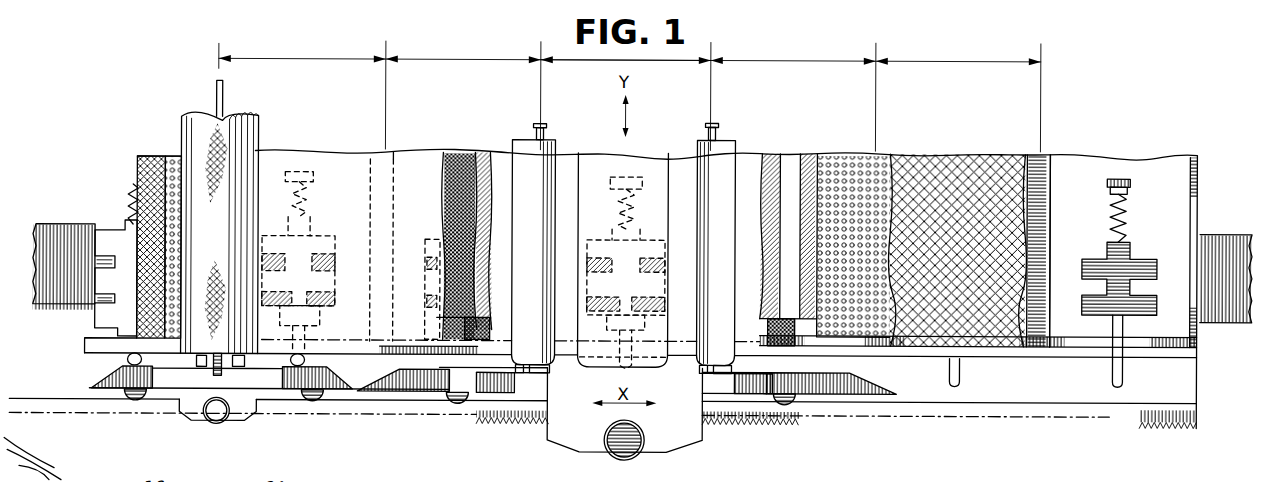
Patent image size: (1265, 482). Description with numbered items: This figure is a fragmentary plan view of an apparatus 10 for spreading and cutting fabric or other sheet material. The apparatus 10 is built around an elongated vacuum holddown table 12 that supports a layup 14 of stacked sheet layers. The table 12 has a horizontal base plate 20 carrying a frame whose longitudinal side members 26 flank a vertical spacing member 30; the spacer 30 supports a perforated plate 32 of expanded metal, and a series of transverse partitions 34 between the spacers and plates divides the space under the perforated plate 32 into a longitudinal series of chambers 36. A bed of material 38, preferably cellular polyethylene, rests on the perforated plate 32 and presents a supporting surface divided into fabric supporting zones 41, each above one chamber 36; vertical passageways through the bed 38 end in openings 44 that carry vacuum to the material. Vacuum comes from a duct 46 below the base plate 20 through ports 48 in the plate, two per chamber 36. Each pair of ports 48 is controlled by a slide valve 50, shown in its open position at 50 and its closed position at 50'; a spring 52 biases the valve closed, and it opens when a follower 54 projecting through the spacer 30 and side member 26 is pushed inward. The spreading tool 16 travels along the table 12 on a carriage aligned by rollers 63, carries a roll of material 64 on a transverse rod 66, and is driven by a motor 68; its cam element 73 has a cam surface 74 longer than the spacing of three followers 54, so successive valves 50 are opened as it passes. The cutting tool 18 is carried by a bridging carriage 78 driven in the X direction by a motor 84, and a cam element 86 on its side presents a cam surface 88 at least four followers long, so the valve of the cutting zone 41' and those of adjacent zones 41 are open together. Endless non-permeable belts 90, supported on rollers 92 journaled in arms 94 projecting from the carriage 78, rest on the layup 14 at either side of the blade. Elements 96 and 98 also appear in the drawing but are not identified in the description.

The apparatus 10 is at (987, 137).
The vacuum holddown table 12 is at (1212, 395).
The layup 14 is at (455, 160).
The spreading tool 16 is at (183, 104).
The cutting tool 18 is at (706, 449).
The base plate 20 is at (1175, 281).
The side member 26 is at (1053, 352).
The vertical spacing member 30 is at (1197, 356).
The perforated plate 32 is at (923, 170).
The partition 34 is at (1038, 163).
The chamber 36 is at (1174, 212).
The bed of material 38 is at (168, 157).
The fabric supporting zone 41 is at (629, 96).
The cutting zone 41' is at (626, 77).
The opening 44 is at (845, 163).
The vacuum duct 46 is at (47, 232).
The port 48 is at (110, 300).
The slide valve 50 is at (1134, 300).
The slide valve closed position 50' is at (364, 270).
The spring 52 is at (132, 197).
The follower 54 is at (127, 361).
The roller 63 is at (130, 402).
The roll of material 64 is at (252, 133).
The rod 66 is at (222, 97).
The drive motor 68 is at (223, 423).
The cam element 73 is at (270, 385).
The cam surface 74 is at (95, 380).
The supporting carriage 78 is at (634, 162).
The drive motor 84 is at (613, 438).
The cam element 86 is at (850, 392).
The cam surface 88 is at (883, 383).
The endless belt 90 is at (530, 155).
The roller 92 is at (545, 132).
The arm 94 is at (507, 375).
The hatched strip 96 is at (498, 168).
The block 98 is at (465, 328).